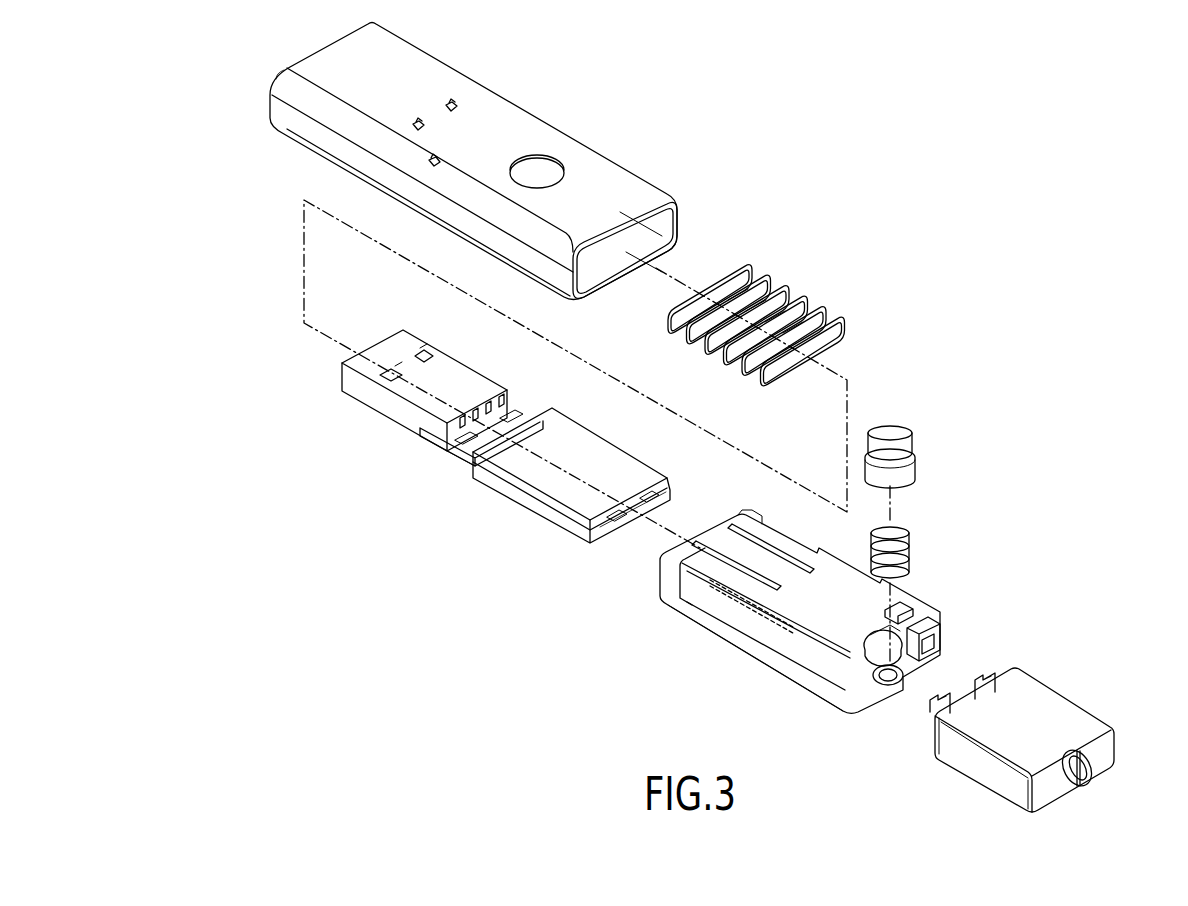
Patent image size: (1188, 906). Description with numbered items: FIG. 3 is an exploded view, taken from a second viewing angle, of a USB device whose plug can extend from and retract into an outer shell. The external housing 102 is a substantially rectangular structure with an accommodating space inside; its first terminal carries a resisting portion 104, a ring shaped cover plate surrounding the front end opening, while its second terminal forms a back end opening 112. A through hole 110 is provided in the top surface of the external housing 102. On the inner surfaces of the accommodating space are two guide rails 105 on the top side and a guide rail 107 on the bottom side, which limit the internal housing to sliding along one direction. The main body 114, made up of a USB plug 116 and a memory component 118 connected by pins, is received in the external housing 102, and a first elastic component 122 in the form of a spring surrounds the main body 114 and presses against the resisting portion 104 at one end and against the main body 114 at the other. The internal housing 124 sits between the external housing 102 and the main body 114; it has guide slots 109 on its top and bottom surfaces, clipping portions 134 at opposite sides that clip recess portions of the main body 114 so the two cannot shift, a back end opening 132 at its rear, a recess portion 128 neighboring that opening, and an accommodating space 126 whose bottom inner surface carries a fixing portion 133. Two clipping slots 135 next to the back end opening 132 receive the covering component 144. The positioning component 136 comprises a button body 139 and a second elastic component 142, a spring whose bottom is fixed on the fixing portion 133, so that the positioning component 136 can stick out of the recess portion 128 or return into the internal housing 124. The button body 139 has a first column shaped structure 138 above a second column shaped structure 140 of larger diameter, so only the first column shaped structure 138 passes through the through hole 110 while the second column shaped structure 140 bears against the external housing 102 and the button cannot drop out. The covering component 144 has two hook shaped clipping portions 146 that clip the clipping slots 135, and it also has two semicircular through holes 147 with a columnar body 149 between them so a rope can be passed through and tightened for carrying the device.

The external housing 102 is at (462, 160).
The resisting portion 104 is at (270, 100).
The guide rails 105 is at (418, 122).
The guide rail 107 is at (434, 167).
The guide slots 109 is at (829, 615).
The through hole 110 is at (536, 172).
The back end opening 112 is at (663, 222).
The main body 114 is at (506, 464).
The USB plug 116 is at (403, 386).
The memory component 118 is at (532, 471).
The first elastic component 122 is at (792, 292).
The internal housing 124 is at (795, 660).
The accommodating space 126 is at (858, 690).
The recess portion 128 is at (880, 640).
The back end opening 132 is at (925, 641).
The fixing portion 133 is at (888, 690).
The clipping portions 134 is at (700, 606).
The clipping slots 135 is at (912, 604).
The positioning component 136 is at (973, 502).
The first column shaped structure 138 is at (912, 451).
The button body 139 is at (950, 470).
The second column shaped structure 140 is at (896, 481).
The second elastic component 142 is at (910, 553).
The covering component 144 is at (1031, 725).
The hook shaped clipping portions 146 is at (990, 673).
The semicircular through holes 147 is at (1085, 787).
The columnar body 149 is at (1092, 755).